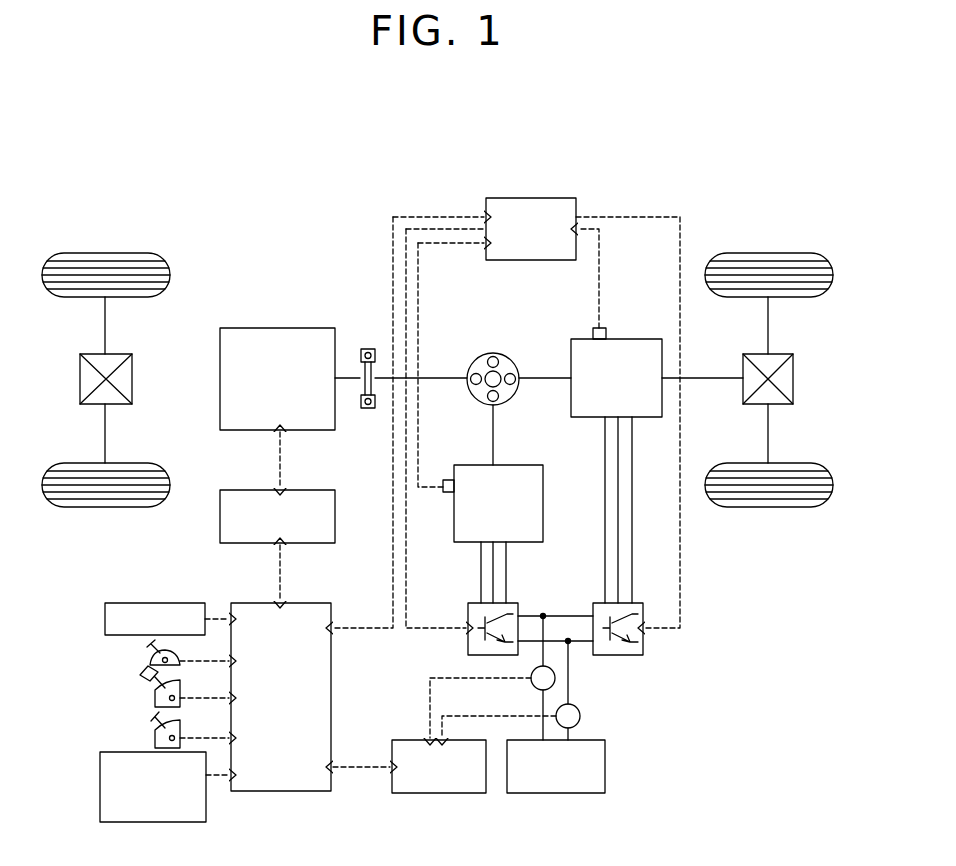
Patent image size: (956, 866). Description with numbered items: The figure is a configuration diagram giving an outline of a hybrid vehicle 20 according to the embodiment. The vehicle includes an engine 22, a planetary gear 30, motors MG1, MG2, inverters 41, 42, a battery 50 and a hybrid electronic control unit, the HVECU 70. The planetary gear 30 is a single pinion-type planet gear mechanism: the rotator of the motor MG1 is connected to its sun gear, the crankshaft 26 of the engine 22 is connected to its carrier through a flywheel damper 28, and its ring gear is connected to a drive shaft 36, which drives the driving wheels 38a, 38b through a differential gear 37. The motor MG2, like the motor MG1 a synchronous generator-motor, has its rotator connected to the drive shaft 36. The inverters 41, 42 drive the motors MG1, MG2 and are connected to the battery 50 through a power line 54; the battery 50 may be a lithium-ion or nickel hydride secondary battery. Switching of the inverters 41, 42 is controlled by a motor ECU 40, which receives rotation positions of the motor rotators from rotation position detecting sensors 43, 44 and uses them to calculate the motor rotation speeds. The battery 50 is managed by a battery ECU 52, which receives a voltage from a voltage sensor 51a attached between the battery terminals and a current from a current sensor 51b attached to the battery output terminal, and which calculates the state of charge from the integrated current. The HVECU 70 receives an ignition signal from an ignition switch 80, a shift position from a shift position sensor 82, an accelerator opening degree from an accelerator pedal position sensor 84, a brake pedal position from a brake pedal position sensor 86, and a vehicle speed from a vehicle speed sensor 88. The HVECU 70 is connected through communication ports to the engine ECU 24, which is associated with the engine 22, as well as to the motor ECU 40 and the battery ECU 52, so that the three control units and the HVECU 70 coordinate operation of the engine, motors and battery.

The hybrid vehicle 20 is at (656, 182).
The engine 22 is at (302, 328).
The engine ECU 24 is at (305, 490).
The crankshaft 26 is at (345, 376).
The flywheel damper 28 is at (367, 410).
The planetary gear 30 is at (493, 353).
The drive shaft 36 is at (706, 378).
The differential gear 37 is at (780, 354).
The driving wheel 38a is at (768, 253).
The driving wheel 38b is at (768, 507).
The motor ECU 40 is at (542, 198).
The inverter 41 is at (513, 603).
The inverter 42 is at (638, 603).
The rotation position detecting sensor 43 is at (450, 480).
The rotation position detecting sensor 44 is at (598, 327).
The battery 50 is at (605, 768).
The voltage sensor 51a is at (581, 716).
The current sensor 51b is at (556, 678).
The battery ECU 52 is at (419, 740).
The power line 54 is at (562, 641).
The HVECU 70 is at (305, 603).
The ignition switch 80 is at (105, 619).
The shift position sensor 82 is at (150, 661).
The accelerator pedal position sensor 84 is at (155, 698).
The brake pedal position sensor 86 is at (155, 738).
The vehicle speed sensor 88 is at (100, 775).
The motor MG1 is at (520, 465).
The motor MG2 is at (632, 339).